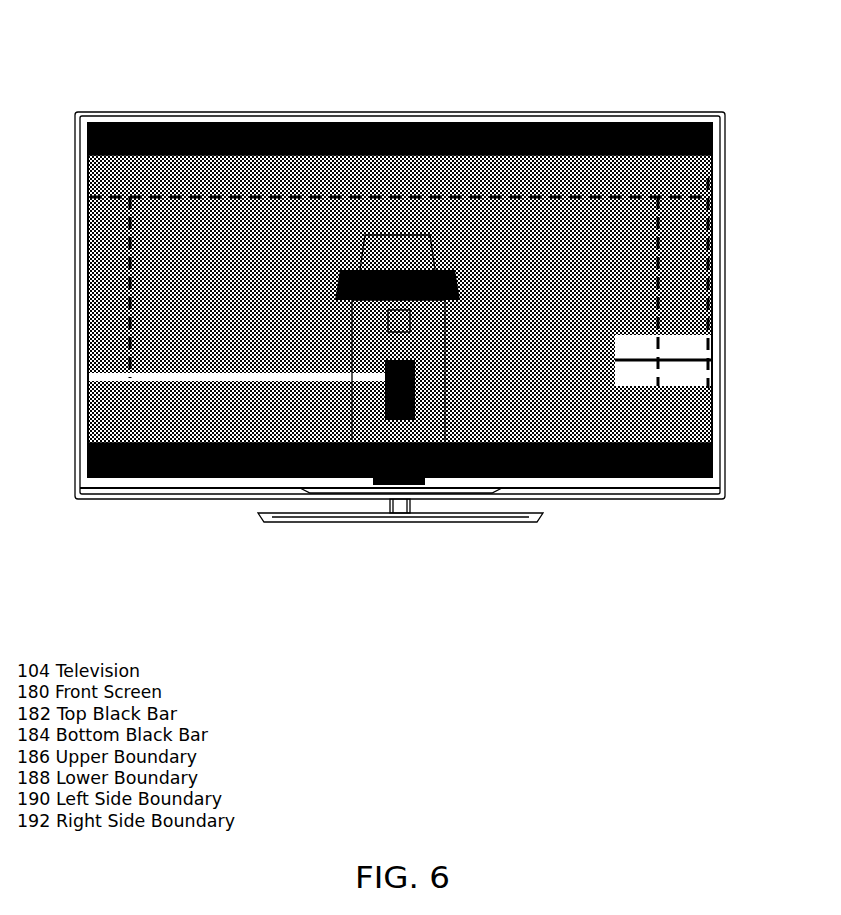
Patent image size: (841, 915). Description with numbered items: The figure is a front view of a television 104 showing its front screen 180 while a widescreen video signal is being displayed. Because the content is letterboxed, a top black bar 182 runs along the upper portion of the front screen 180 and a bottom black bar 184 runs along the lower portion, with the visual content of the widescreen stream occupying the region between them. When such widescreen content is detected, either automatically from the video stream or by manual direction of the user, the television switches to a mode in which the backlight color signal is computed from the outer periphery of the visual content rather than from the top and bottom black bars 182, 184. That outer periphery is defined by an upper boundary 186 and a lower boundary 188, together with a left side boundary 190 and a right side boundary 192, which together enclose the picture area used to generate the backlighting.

The television 104 is at (348, 80).
The front screen 180 is at (542, 112).
The top black bar 182 is at (713, 135).
The bottom black bar 184 is at (713, 470).
The upper boundary 186 is at (87, 142).
The lower boundary 188 is at (87, 472).
The left side boundary 190 is at (87, 293).
The right side boundary 192 is at (713, 290).